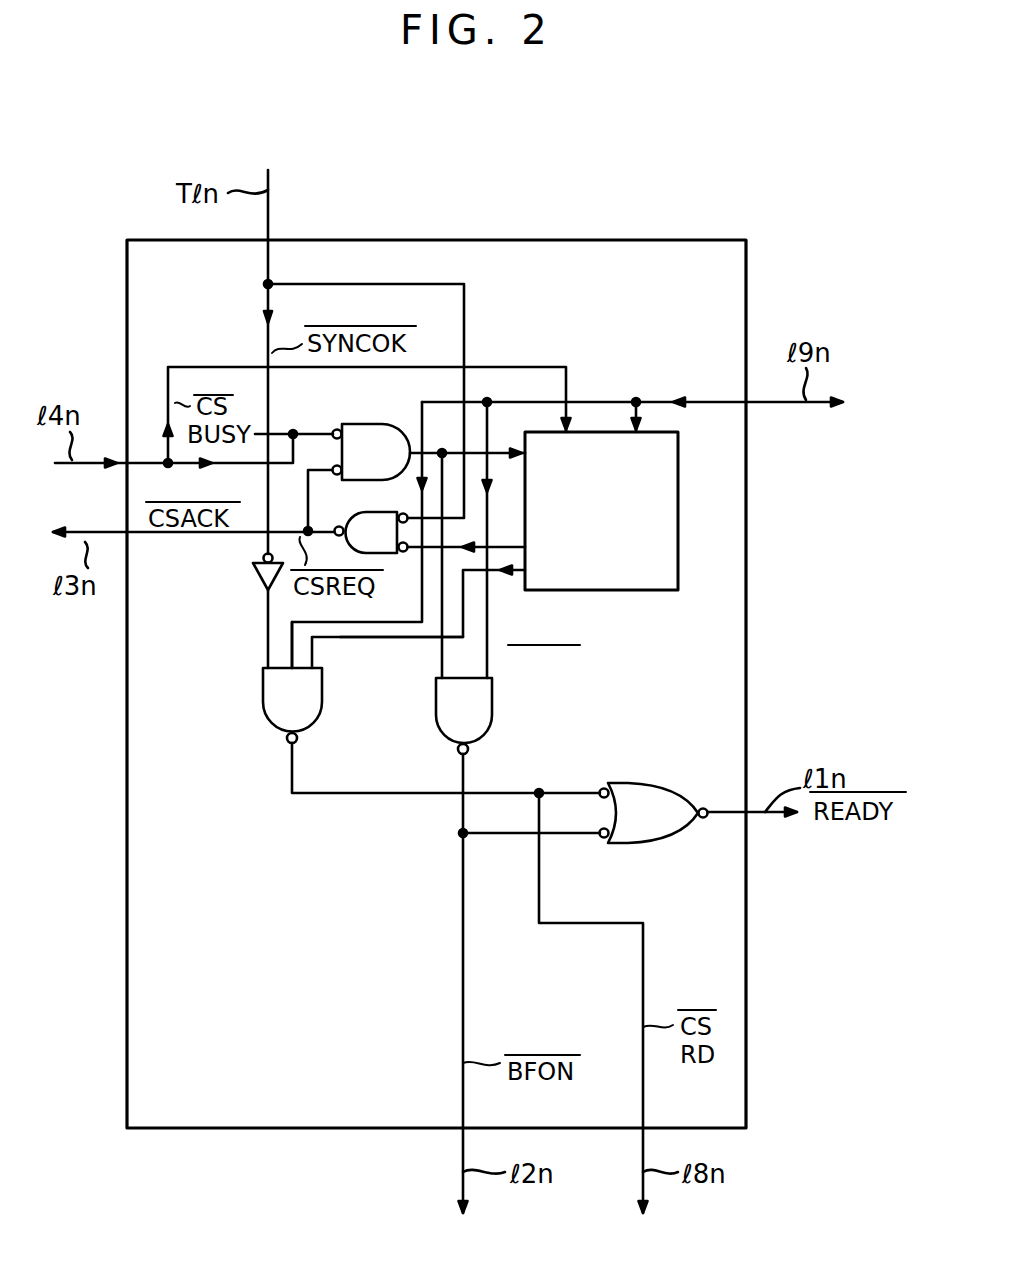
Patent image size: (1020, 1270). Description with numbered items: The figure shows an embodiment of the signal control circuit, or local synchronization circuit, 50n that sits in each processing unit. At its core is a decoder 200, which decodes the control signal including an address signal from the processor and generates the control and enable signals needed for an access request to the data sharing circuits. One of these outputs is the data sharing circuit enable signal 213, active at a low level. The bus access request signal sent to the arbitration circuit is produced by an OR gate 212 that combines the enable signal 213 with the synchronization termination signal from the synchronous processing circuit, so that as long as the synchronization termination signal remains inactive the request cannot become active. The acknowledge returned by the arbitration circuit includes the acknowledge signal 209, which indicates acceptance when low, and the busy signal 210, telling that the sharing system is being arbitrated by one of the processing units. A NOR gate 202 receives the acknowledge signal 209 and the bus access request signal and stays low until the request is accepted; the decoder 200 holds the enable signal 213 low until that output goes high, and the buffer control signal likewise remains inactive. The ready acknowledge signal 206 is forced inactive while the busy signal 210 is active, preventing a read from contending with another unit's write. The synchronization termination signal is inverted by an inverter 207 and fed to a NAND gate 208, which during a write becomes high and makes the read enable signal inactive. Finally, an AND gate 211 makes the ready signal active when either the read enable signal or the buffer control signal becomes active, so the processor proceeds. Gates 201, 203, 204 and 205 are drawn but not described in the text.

The signal control circuit 50n is at (746, 266).
The decoder 200 is at (658, 591).
The NAND gate 201 is at (480, 747).
The NOR gate 202 is at (388, 424).
The signal line l9n 203 is at (650, 408).
The WT signal line 204 is at (487, 660).
The RD signal line 205 is at (292, 635).
The RDYACK signal 206 is at (372, 638).
The inverter 207 is at (253, 578).
The NAND gate 208 is at (263, 697).
The CSACK signal 209 is at (312, 430).
The CSBUSY signal 210 is at (190, 367).
The AND gate 211 is at (663, 845).
The OR gate 212 is at (372, 512).
The CSEN signal 213 is at (515, 566).